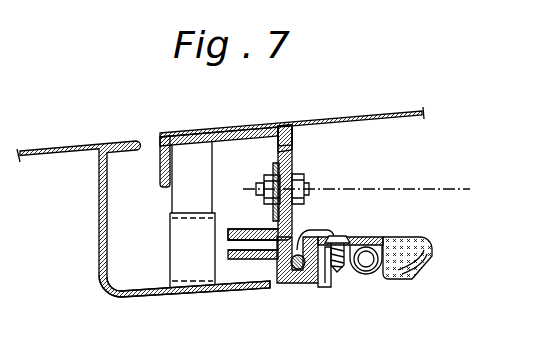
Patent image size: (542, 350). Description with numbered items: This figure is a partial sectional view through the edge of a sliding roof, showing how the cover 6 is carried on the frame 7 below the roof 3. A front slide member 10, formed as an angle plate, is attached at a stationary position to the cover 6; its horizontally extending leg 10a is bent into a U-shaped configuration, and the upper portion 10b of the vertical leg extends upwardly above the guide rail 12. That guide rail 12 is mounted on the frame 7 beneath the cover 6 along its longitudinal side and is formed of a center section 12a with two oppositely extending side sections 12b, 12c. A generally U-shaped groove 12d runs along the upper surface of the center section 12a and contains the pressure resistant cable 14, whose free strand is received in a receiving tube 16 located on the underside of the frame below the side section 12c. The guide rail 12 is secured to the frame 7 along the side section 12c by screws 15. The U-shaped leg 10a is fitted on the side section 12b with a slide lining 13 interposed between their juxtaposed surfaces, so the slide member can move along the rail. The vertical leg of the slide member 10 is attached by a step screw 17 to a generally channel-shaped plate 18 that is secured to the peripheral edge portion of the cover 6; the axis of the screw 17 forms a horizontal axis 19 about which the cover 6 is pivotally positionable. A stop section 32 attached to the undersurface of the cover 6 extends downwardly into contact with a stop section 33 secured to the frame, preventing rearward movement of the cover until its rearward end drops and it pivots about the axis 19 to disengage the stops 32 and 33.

The roof 3 is at (68, 147).
The cover 6 is at (337, 116).
The frame 7 is at (136, 297).
The front slide member 10 is at (293, 221).
The horizontally extending leg 10a is at (236, 229).
The top portion of clip 10b is at (278, 152).
The guide rail 12 is at (287, 276).
The center section 12a is at (320, 282).
The side section 12b is at (254, 266).
The side section 12c is at (380, 237).
The U-shaped groove 12d is at (330, 229).
The slide lining 13 is at (240, 250).
The pressure resistant cable 14 is at (304, 270).
The screws 15 is at (345, 237).
The receiving tube 16 is at (366, 273).
The step screw 17 is at (300, 184).
The channel-shaped plate 18 is at (297, 145).
The horizontal axis 19 is at (434, 188).
The stop section 32 is at (197, 162).
The stop section 33 is at (181, 246).